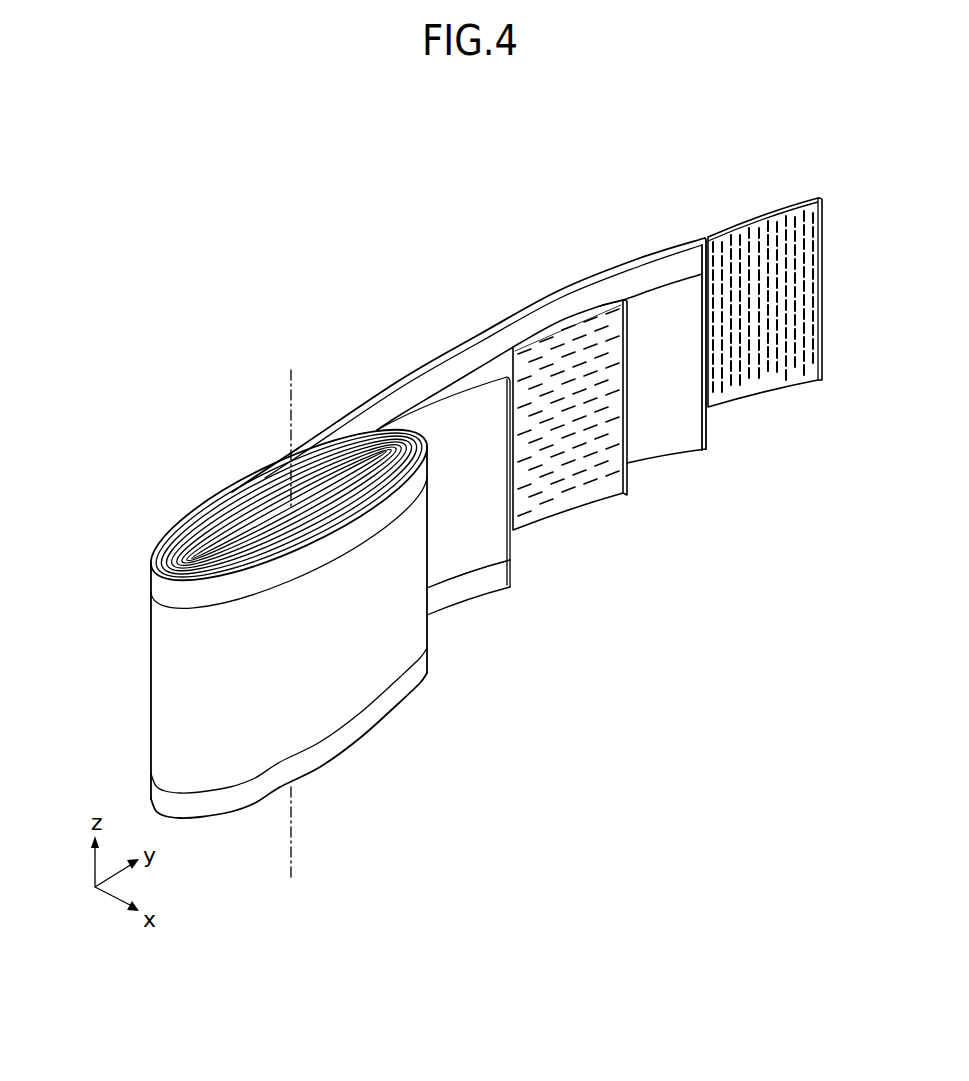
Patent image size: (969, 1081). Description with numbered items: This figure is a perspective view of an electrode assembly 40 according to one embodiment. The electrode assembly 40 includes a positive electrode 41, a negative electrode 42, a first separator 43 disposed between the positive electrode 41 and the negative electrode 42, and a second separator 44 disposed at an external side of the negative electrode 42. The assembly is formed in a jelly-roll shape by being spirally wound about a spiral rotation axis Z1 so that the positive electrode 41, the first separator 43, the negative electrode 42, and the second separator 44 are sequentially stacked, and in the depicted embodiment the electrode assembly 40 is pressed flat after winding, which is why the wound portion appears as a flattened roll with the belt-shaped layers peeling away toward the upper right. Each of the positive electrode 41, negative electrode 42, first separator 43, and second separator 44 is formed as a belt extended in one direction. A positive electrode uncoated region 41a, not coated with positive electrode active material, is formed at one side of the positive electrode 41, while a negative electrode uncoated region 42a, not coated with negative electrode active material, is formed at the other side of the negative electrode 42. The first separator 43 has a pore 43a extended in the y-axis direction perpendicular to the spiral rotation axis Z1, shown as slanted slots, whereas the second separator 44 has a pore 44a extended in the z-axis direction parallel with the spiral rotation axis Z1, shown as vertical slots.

The electrode assembly 40 is at (211, 480).
The positive electrode 41 is at (455, 558).
The positive electrode uncoated region 41a is at (487, 578).
The negative electrode 42 is at (681, 430).
The negative electrode uncoated region 42a is at (638, 261).
The first separator 43 is at (610, 487).
The pore 43a is at (511, 362).
The second separator 44 is at (777, 383).
The pore 44a is at (757, 217).
The spiral rotation axis Z1 is at (291, 838).